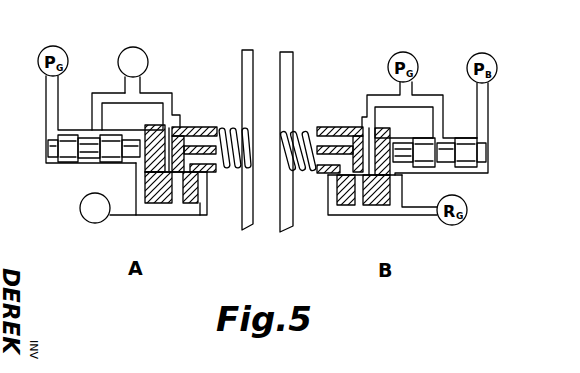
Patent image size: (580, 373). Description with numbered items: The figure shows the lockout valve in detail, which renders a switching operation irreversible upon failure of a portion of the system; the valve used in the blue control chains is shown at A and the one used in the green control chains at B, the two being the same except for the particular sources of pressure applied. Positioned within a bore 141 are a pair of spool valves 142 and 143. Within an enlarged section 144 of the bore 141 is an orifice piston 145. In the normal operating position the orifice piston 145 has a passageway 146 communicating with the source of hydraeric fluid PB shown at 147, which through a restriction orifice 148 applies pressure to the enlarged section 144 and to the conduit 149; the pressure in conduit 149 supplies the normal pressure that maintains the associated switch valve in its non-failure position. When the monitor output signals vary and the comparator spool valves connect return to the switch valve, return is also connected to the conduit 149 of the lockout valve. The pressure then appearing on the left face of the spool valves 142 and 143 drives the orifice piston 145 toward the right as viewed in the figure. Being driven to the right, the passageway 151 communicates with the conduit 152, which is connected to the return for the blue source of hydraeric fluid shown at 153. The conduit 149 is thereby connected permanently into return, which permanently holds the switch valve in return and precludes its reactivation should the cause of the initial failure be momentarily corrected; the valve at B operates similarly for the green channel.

The bore 141 is at (52, 163).
The spool valve 142 is at (70, 165).
The spool valve 143 is at (110, 158).
The enlarged section of the bore 144 is at (232, 127).
The orifice piston 145 is at (188, 127).
The passageway 146 is at (163, 127).
The source of hydraeric fluid PB 147 is at (141, 47).
The restriction orifice 148 is at (204, 127).
The conduit 149 is at (255, 60).
The passageway 151 is at (211, 160).
The conduit 152 is at (200, 215).
The return for the blue source of hydraeric fluid 153 is at (92, 222).